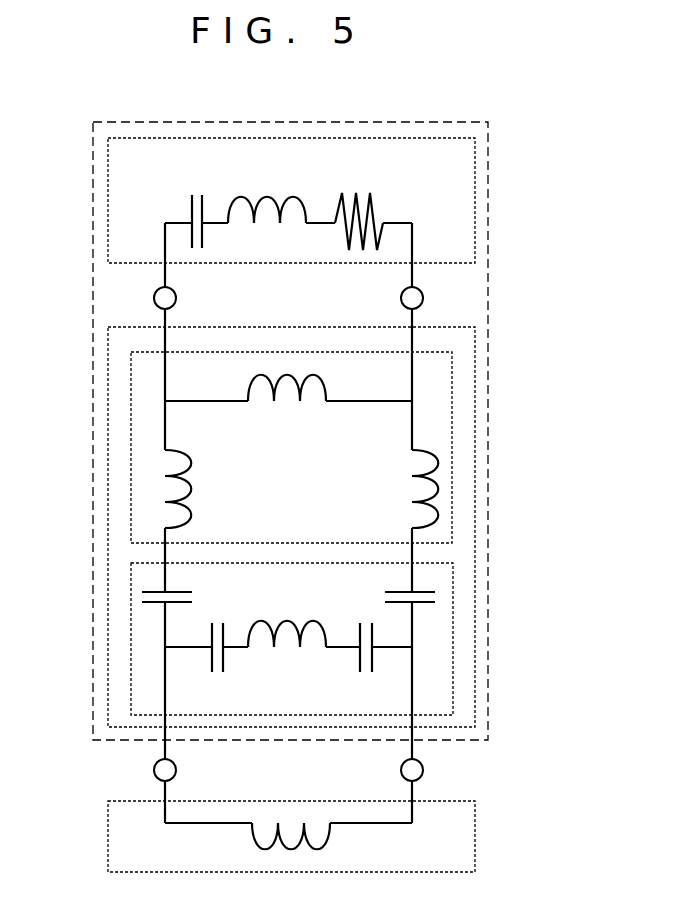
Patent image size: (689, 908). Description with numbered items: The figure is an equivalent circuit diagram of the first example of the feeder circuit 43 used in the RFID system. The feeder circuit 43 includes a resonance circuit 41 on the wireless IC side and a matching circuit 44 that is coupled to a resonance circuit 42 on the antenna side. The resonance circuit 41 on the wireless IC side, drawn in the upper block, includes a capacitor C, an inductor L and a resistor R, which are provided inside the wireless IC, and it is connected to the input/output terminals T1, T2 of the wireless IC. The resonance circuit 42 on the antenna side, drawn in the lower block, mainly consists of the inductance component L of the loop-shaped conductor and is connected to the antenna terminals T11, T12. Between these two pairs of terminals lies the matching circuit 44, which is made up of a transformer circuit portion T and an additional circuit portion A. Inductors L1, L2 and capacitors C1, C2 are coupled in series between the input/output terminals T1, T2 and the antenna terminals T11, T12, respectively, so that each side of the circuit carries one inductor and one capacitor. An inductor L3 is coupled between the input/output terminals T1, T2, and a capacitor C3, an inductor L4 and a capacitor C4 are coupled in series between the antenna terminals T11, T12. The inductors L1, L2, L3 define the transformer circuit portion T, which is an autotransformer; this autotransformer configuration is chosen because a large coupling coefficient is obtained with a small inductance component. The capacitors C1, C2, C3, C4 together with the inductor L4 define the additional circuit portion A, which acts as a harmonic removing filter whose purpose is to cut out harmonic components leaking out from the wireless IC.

The resonance circuit 41 is at (475, 188).
The resonance circuit 42 is at (108, 833).
The feeder circuit 43 is at (488, 293).
The matching circuit 44 is at (108, 390).
The transformer circuit portion T is at (131, 470).
The additional circuit portion A is at (131, 635).
The input/output terminal T1 is at (183, 298).
The input/output terminal T2 is at (392, 298).
The antenna terminal T11 is at (137, 771).
The antenna terminal T12 is at (440, 771).
The capacitor C is at (199, 203).
The inductor L is at (291, 510).
The resistor R is at (359, 204).
The inductor L1 is at (203, 489).
The inductor L2 is at (401, 489).
The inductor L3 is at (287, 413).
The inductor L4 is at (287, 664).
The capacitor C1 is at (183, 590).
The capacitor C2 is at (392, 590).
The capacitor C3 is at (217, 670).
The capacitor C4 is at (369, 671).